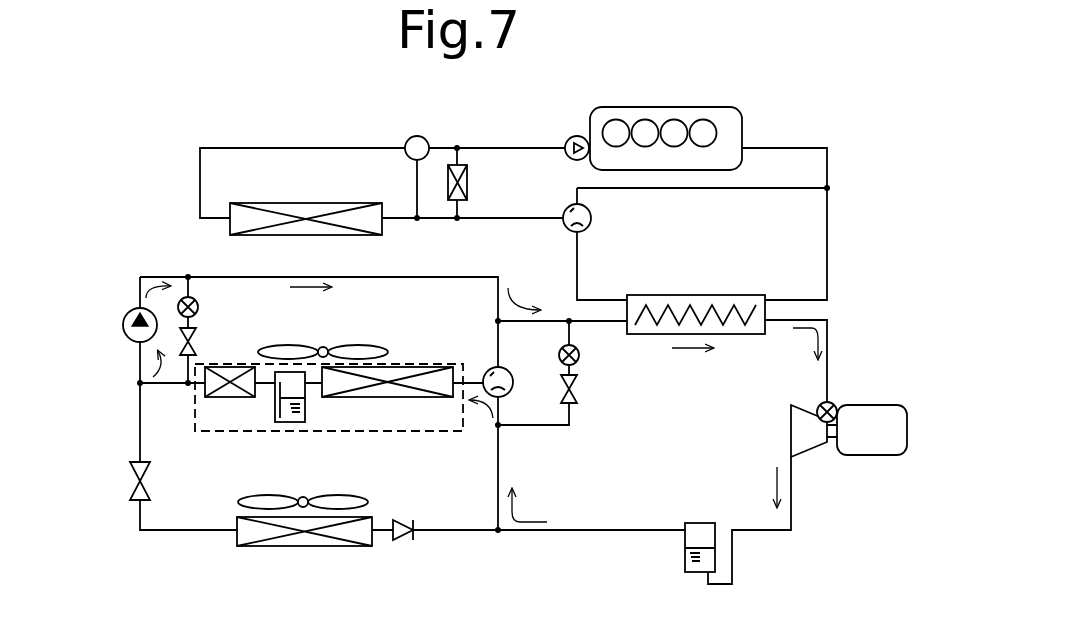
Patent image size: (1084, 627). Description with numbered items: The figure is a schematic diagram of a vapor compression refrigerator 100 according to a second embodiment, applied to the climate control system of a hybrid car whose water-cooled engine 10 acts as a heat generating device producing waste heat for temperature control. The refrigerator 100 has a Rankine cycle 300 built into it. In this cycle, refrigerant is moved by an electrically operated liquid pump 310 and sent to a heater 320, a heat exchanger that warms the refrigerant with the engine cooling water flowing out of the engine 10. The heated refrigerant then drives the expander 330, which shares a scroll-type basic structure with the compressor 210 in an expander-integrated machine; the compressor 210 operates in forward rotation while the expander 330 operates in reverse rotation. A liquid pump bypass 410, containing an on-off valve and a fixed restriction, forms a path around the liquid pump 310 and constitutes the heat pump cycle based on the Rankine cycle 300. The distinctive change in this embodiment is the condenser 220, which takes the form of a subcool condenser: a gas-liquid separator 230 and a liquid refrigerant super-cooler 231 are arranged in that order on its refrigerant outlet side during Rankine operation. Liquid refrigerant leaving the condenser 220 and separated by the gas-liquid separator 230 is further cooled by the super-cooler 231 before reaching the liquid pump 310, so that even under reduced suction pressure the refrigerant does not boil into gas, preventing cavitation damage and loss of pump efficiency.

The engine 10 is at (657, 107).
The vapor compression refrigerator 100 is at (140, 262).
The Rankine cycle 300 is at (430, 268).
The liquid pump 310 is at (123, 322).
The liquid pump bypass 410 is at (200, 292).
The liquid refrigerant super-cooler 231 is at (227, 397).
The gas-liquid separator 230 is at (290, 422).
The condenser 220 is at (383, 397).
The heater 320 is at (652, 334).
The expander 330 is at (800, 434).
The compressor 210 is at (791, 435).